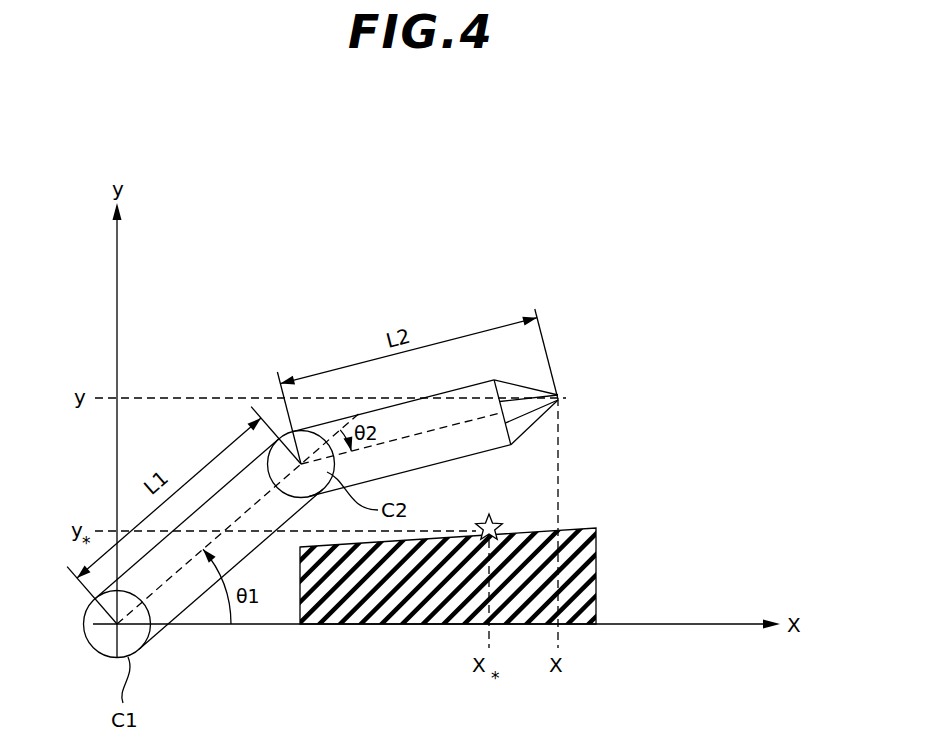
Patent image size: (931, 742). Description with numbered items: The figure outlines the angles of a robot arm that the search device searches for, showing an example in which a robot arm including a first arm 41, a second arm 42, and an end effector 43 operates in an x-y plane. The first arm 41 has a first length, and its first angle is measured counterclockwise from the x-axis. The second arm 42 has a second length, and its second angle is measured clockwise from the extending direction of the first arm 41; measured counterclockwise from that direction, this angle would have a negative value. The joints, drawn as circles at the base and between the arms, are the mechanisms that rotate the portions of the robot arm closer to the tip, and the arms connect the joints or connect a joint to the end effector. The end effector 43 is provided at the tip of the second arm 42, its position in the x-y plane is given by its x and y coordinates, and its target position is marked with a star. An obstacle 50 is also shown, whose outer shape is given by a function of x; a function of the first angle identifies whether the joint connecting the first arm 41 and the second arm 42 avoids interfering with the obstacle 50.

The first arm 41 is at (177, 605).
The second arm 42 is at (447, 448).
The end effector 43 is at (559, 392).
The obstacle 50 is at (597, 558).